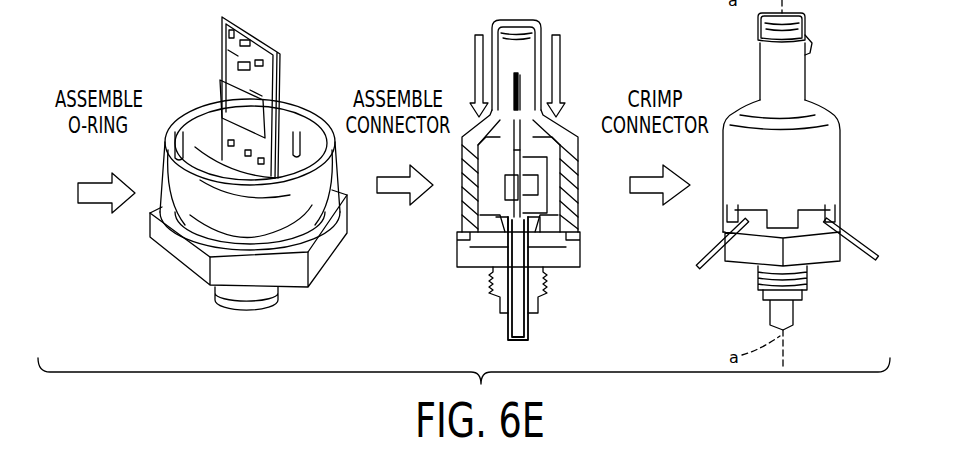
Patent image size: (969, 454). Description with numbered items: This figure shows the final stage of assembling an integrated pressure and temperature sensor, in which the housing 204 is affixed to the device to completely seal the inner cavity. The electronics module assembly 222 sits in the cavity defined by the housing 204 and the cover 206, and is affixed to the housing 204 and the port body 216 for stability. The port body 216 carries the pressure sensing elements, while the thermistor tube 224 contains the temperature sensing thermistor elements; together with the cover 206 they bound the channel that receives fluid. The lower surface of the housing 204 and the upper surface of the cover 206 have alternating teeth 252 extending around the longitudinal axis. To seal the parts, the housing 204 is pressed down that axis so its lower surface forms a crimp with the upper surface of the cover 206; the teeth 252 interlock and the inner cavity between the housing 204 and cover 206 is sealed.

The housing 204 is at (570, 133).
The cover 206 is at (177, 243).
The port body 216 is at (545, 257).
The electronics module assembly 222 is at (227, 102).
The thermistor tube 224 is at (532, 230).
The alternating teeth 252 is at (757, 220).